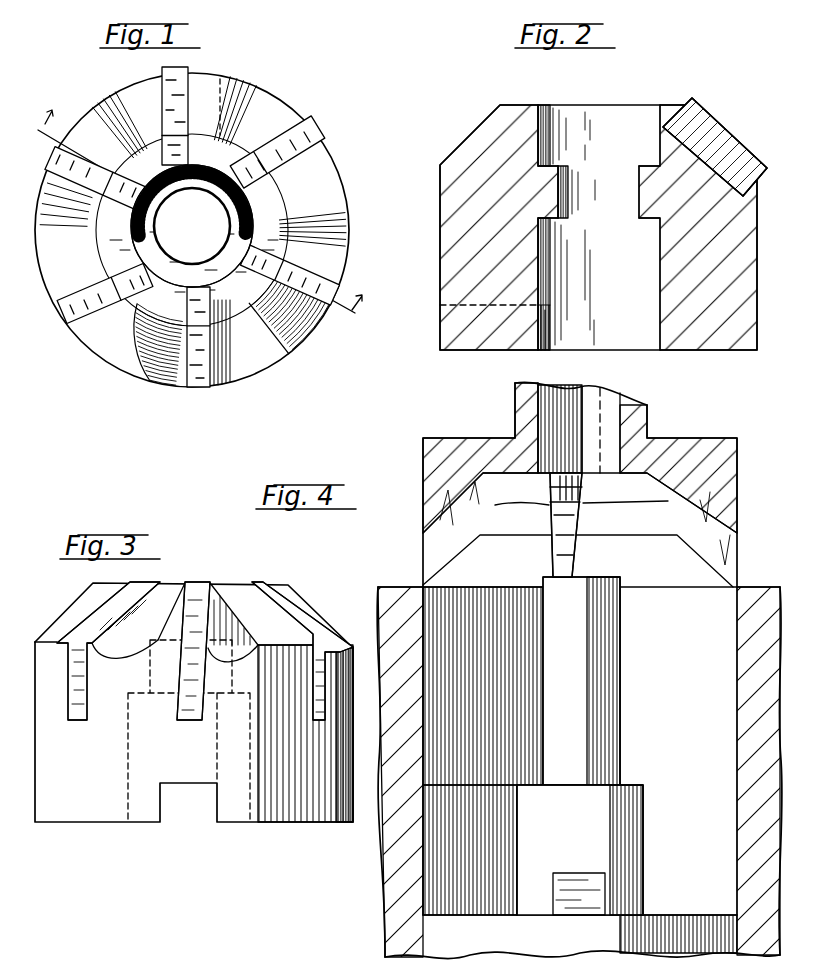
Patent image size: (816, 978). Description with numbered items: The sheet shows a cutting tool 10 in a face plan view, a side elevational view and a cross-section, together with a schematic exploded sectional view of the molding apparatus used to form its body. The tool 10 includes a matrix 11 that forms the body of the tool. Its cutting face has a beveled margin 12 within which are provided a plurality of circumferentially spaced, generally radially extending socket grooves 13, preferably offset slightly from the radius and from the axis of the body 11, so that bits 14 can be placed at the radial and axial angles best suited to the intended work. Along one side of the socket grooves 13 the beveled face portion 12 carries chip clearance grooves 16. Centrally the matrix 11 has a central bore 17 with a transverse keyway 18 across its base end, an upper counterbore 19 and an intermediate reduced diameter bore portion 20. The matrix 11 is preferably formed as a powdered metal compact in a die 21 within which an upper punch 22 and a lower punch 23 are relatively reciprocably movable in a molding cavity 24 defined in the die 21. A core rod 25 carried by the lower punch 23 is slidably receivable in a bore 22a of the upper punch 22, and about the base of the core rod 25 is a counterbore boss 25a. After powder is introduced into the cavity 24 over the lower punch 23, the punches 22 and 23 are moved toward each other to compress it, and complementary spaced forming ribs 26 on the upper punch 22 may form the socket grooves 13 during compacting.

In FIG. 1, the cutting tool 10 is at (250, 80).
In FIG. 1, the matrix 11 is at (347, 183).
In FIG. 3, the matrix 11 is at (300, 800).
In FIG. 1, the beveled margin 12 is at (332, 206).
In FIG. 2, the beveled margin 12 is at (470, 127).
In FIG. 3, the beveled margin 12 is at (82, 600).
In FIG. 1, the socket grooves 13 is at (214, 389).
In FIG. 2, the socket grooves 13 is at (757, 213).
In FIG. 1, the bits 14 is at (180, 93).
In FIG. 2, the bits 14 is at (735, 152).
In FIG. 3, the bits 14 is at (127, 586).
In FIG. 1, the chip clearance grooves 16 is at (150, 85).
In FIG. 3, the chip clearance grooves 16 is at (120, 654).
In FIG. 2, the central bore 17 is at (660, 305).
In FIG. 3, the central bore 17 is at (130, 805).
In FIG. 1, the transverse keyway 18 is at (160, 360).
In FIG. 2, the transverse keyway 18 is at (542, 338).
In FIG. 3, the transverse keyway 18 is at (175, 808).
In FIG. 1, the upper counterbore 19 is at (225, 206).
In FIG. 2, the upper counterbore 19 is at (560, 112).
In FIG. 1, the intermediate reduced diameter bore portion 20 is at (186, 263).
In FIG. 2, the intermediate reduced diameter bore portion 20 is at (637, 175).
In FIG. 4, the die 21 is at (395, 905).
In FIG. 4, the upper punch 22 is at (455, 452).
In FIG. 4, the bore of the upper punch member 22a is at (617, 428).
In FIG. 4, the lower punch 23 is at (700, 918).
In FIG. 4, the molding cavity 24 is at (696, 737).
In FIG. 4, the core rod 25 is at (620, 700).
In FIG. 4, the counterbore boss 25a is at (643, 820).
In FIG. 4, the forming ribs 26 is at (560, 497).